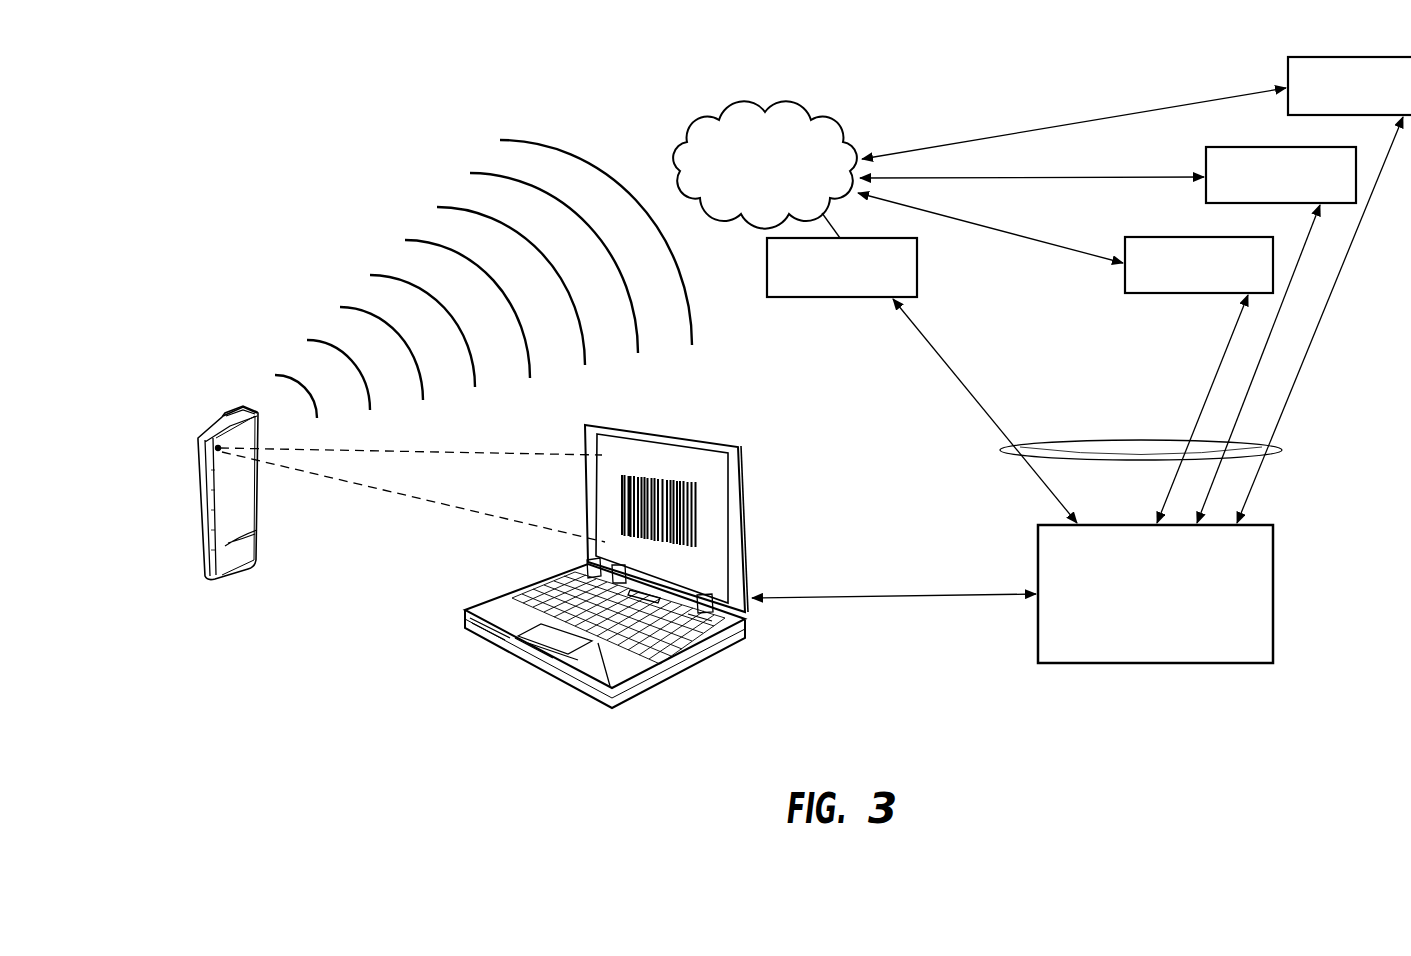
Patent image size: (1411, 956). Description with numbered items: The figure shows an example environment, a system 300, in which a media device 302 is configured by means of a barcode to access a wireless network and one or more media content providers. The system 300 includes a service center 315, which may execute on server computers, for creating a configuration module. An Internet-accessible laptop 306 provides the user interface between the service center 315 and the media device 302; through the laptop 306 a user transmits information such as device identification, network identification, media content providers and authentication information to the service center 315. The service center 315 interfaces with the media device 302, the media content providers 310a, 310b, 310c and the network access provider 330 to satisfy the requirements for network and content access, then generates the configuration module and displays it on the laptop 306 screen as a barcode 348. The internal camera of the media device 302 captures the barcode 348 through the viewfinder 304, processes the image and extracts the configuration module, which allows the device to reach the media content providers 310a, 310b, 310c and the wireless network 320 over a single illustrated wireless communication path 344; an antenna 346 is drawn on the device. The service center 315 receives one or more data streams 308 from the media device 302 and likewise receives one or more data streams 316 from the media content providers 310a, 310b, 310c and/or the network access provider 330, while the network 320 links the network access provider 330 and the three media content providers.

The system 300 is at (1195, 724).
The media device 302 is at (195, 527).
The viewfinder 304 is at (276, 503).
The laptop 306 is at (640, 692).
The data streams 308 is at (885, 599).
The media content provider 310a is at (1410, 97).
The media content provider 310b is at (1332, 186).
The media content provider 310c is at (1250, 275).
The service center 315 is at (1139, 617).
The data streams 316 is at (1141, 440).
The network 320 is at (749, 188).
The network access provider 330 is at (887, 278).
The wireless communication path 344 is at (440, 240).
The antenna 346 is at (226, 415).
The barcode 348 is at (700, 538).